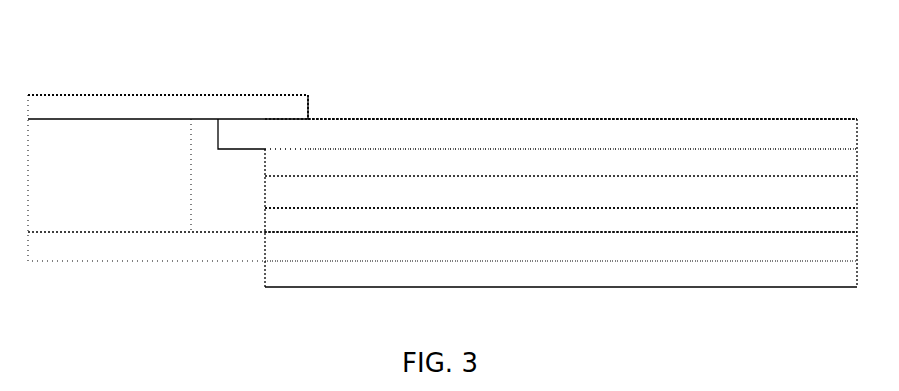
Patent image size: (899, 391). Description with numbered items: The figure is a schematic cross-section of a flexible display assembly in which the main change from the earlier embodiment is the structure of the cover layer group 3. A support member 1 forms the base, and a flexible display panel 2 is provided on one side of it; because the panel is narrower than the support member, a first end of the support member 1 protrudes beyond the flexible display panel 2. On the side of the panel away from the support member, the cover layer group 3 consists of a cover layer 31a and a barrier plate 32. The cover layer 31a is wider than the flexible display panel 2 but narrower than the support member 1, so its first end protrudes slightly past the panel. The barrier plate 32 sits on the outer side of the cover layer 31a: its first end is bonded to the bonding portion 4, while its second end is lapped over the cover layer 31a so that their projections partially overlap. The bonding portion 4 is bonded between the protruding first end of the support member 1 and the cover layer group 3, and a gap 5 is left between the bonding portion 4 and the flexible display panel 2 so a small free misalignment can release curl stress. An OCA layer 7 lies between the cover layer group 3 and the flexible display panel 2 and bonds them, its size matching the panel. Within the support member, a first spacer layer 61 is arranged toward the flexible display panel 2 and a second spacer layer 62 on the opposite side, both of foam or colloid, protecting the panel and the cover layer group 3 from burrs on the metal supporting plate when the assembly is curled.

The support member 1 is at (131, 246).
The flexible display panel 2 is at (552, 195).
The cover layer group 3 is at (372, 75).
The cover layer 31a is at (357, 140).
The barrier plate 32 is at (298, 117).
The bonding portion 4 is at (161, 162).
The gap 5 is at (253, 177).
The OCA layer 7 is at (410, 163).
The first spacer layer 61 is at (552, 218).
The second spacer layer 62 is at (430, 267).